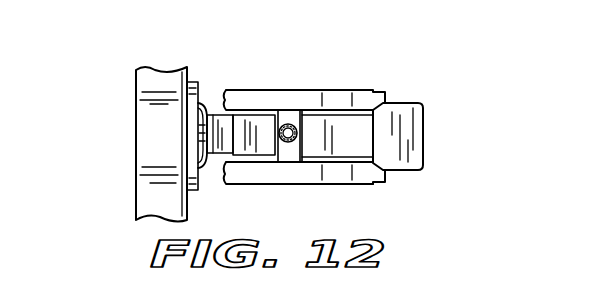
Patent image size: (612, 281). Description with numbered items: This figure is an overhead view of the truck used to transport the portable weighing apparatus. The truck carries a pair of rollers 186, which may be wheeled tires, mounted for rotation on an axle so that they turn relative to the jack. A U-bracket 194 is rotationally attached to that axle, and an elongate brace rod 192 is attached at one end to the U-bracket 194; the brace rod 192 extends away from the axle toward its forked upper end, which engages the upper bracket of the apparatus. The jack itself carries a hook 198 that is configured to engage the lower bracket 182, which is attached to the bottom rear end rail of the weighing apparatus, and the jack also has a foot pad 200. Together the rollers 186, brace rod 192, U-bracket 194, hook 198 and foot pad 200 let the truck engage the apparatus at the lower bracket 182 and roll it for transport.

The lower bracket 182 is at (197, 82).
The rollers 186 is at (362, 90).
The brace rod 192 is at (287, 143).
The U-bracket 194 is at (288, 124).
The hook 198 is at (196, 135).
The foot pad 200 is at (423, 133).